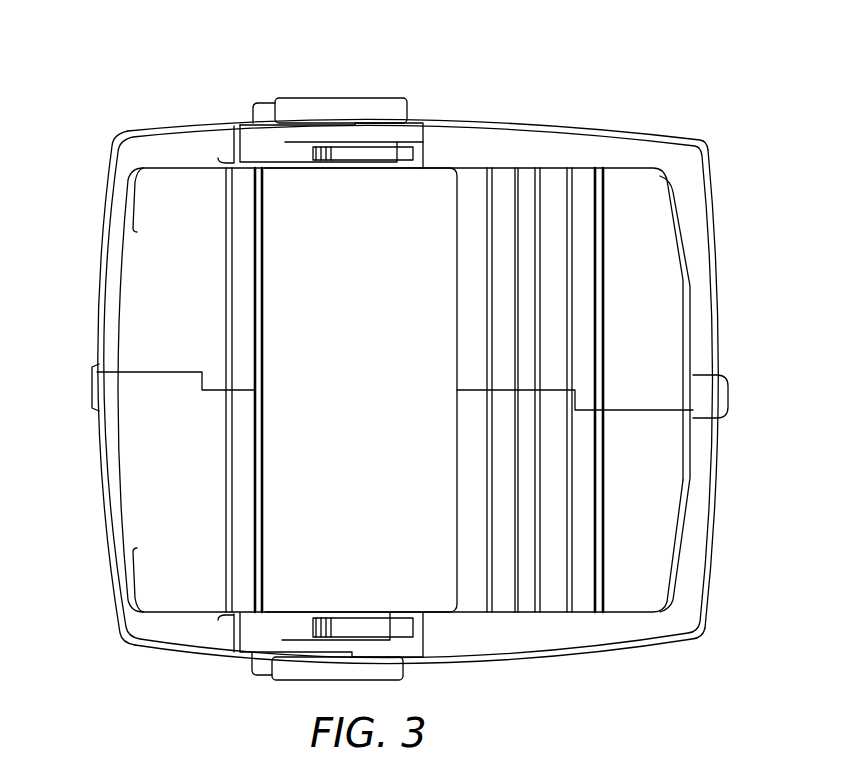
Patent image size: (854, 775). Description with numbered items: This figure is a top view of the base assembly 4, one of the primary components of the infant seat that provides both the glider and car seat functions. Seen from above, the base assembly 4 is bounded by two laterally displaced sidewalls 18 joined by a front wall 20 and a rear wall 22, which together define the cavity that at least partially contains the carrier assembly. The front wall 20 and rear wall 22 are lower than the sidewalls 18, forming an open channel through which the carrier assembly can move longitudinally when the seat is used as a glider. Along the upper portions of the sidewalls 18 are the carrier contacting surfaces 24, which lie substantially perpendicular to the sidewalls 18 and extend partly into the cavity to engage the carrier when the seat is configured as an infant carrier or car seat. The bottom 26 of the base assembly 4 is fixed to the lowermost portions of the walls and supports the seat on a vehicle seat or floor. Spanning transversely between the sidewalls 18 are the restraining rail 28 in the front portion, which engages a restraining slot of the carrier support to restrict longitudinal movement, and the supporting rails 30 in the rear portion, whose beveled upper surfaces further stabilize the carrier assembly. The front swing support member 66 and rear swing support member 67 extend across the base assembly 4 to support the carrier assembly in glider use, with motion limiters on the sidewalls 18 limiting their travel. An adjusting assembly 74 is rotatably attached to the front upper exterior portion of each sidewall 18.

The base assembly 4 is at (735, 100).
The sidewalls 18 is at (640, 134).
The front wall 20 is at (101, 478).
The rear wall 22 is at (722, 273).
The carrier contacting surfaces 24 is at (172, 641).
The bottom 26 is at (135, 319).
The restraining rail 28 is at (235, 223).
The supporting rails 30 is at (505, 178).
The front swing support member 66 is at (263, 291).
The rear swing support member 67 is at (604, 315).
The adjusting assembly 74 is at (370, 70).